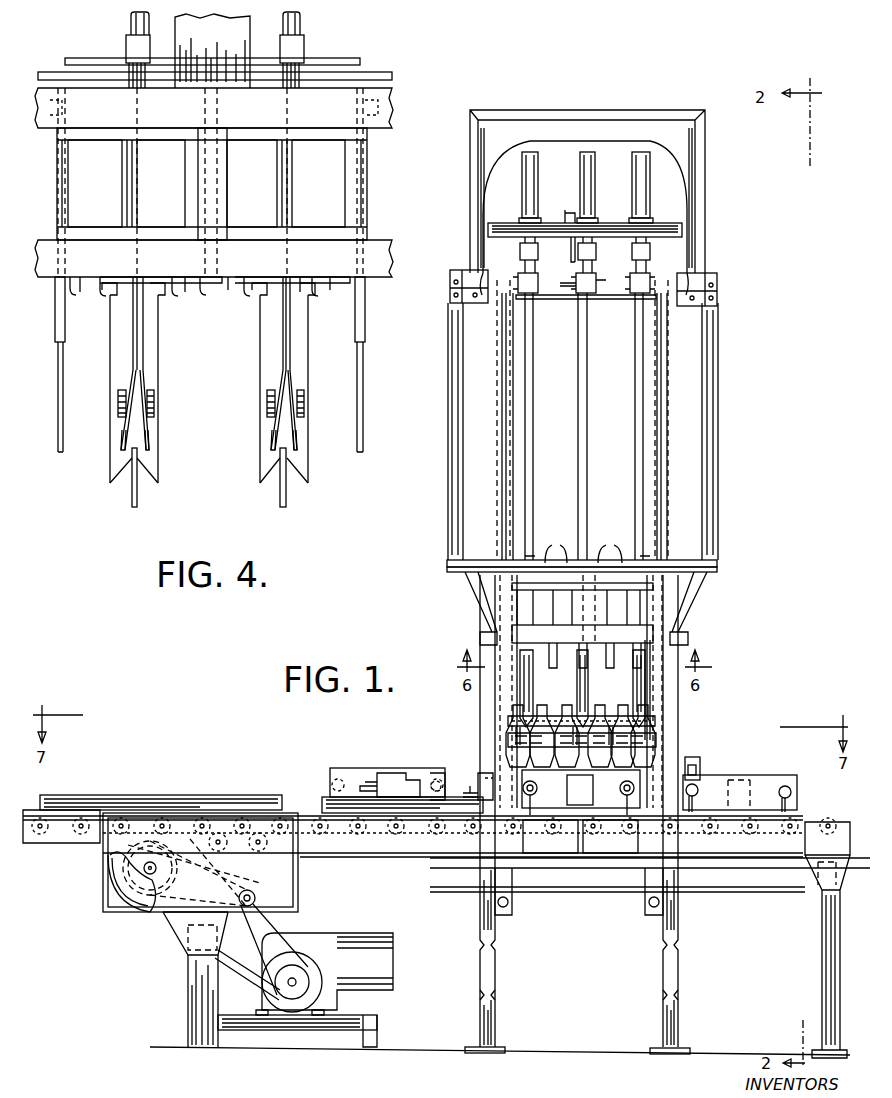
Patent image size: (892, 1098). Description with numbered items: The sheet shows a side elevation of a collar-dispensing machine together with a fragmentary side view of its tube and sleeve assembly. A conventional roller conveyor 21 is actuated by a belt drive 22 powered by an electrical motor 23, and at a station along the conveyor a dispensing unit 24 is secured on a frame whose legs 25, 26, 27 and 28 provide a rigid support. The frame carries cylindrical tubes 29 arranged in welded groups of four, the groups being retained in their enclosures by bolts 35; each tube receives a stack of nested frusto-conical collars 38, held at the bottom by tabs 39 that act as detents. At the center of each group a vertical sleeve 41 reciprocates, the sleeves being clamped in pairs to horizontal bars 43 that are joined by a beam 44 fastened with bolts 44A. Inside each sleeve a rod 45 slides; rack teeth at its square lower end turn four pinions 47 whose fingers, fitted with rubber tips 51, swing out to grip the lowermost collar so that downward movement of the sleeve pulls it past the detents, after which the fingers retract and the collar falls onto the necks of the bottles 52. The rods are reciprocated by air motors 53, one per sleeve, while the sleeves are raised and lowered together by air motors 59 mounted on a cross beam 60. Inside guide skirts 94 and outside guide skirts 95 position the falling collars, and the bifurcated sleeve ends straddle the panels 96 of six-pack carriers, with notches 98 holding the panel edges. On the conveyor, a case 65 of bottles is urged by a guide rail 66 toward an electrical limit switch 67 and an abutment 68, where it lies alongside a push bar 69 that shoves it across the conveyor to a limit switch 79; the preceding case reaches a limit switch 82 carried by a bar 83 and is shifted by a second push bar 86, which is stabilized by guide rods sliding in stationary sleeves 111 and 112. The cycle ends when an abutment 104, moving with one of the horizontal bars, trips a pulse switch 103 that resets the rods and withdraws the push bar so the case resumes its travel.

In FIG. 1, the roller conveyor 21 is at (73, 852).
In FIG. 1, the belt drive 22 is at (262, 940).
In FIG. 1, the electrical motor 23 is at (292, 1012).
In FIG. 1, the dispensing unit 24 is at (694, 632).
In FIG. 1, the leg 25 is at (494, 1020).
In FIG. 1, the leg 26 is at (677, 1020).
In FIG. 1, the leg 27 is at (495, 968).
In FIG. 1, the leg 28 is at (678, 968).
In FIG. 4, the cylindrical tubes 29 is at (83, 188).
In FIG. 1, the cylindrical tubes 29 is at (525, 555).
In FIG. 4, the bolts 35 is at (62, 108).
In FIG. 1, the frusto-conical collars 38 is at (508, 738).
In FIG. 4, the tabs 39 is at (110, 300).
In FIG. 4, the vertical sleeve 41 is at (126, 44).
In FIG. 1, the vertical sleeve 41 is at (533, 447).
In FIG. 1, the horizontal bars 43 is at (538, 278).
In FIG. 1, the beam 44 is at (562, 300).
In FIG. 1, the bolts 44A is at (518, 303).
In FIG. 4, the rod 45 is at (130, 22).
In FIG. 4, the pinions 47 is at (118, 398).
In FIG. 4, the rubber tips 51 is at (118, 412).
In FIG. 1, the bottles 52 is at (510, 721).
In FIG. 1, the air motors 53 is at (538, 253).
In FIG. 1, the air motors 59 is at (538, 170).
In FIG. 1, the cross beam 60 is at (584, 218).
In FIG. 1, the case 65 is at (512, 775).
In FIG. 1, the guide rail 66 is at (118, 795).
In FIG. 1, the electrical limit switch 67 is at (478, 790).
In FIG. 1, the abutment 68 is at (470, 797).
In FIG. 1, the push bar 69 is at (355, 770).
In FIG. 1, the limit switch 79 is at (397, 770).
In FIG. 1, the limit switch 82 is at (700, 765).
In FIG. 1, the bar 83 is at (770, 782).
In FIG. 1, the push bar 86 is at (601, 796).
In FIG. 4, the inside guide skirts 94 is at (121, 440).
In FIG. 4, the outside guide skirts 95 is at (64, 390).
In FIG. 1, the outside guide skirts 95 is at (650, 690).
In FIG. 4, the panels 96 is at (138, 490).
In FIG. 1, the panels 96 is at (612, 722).
In FIG. 4, the notches 98 is at (140, 462).
In FIG. 1, the pulse switch 103 is at (568, 237).
In FIG. 1, the abutment 104 is at (574, 282).
In FIG. 1, the stationary sleeve 111 is at (550, 836).
In FIG. 1, the stationary sleeve 112 is at (610, 836).